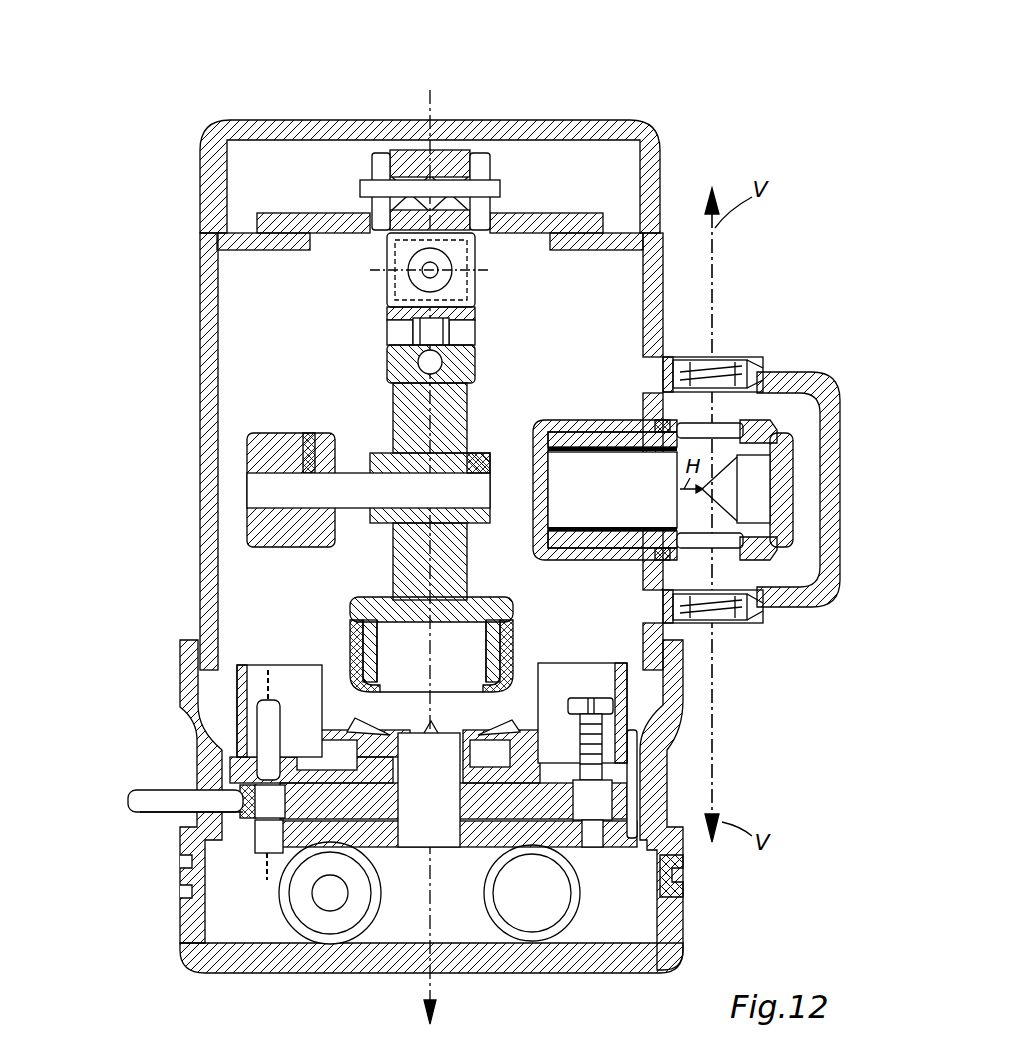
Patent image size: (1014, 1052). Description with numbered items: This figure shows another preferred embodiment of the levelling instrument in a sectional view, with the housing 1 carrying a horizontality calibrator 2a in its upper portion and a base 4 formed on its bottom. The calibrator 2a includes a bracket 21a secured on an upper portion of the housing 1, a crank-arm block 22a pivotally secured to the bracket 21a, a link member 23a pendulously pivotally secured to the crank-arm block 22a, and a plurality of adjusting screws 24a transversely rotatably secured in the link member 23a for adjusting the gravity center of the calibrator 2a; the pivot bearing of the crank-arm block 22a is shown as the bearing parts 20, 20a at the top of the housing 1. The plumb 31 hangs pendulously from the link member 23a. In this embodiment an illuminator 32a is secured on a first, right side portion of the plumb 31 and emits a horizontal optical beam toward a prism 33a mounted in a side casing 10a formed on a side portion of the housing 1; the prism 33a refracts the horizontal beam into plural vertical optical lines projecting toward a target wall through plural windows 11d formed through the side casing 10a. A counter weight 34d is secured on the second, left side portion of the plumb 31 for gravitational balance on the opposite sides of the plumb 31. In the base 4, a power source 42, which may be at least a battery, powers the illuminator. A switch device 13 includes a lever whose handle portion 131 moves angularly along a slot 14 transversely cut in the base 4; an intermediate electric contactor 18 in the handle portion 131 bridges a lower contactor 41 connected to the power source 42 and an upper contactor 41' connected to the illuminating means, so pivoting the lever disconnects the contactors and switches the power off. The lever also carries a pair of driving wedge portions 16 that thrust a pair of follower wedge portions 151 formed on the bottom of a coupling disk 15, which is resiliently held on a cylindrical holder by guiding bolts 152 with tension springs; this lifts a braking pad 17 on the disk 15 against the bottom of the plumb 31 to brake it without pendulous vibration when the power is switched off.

The housing 1 is at (688, 176).
The horizontality calibrator 2a is at (526, 170).
The base 4 is at (690, 936).
The side casing 10a is at (783, 378).
The windows 11d is at (727, 357).
The switch device 13 is at (688, 882).
The slot 14 is at (200, 812).
The coupling disk 15 is at (665, 767).
The driving wedge portions 16 is at (437, 748).
The braking pad 17 is at (665, 812).
The intermediate electric contactor 18 is at (282, 800).
The bearing unit 20 is at (525, 165).
The bearing block 20a is at (376, 160).
The bracket 21a is at (345, 160).
The crank-arm block 22a is at (475, 160).
The link member 23a is at (385, 305).
The adjusting screws 24a is at (387, 360).
The plumb 31 is at (365, 622).
The illuminator 32a is at (647, 493).
The prism 33a is at (753, 503).
The counter weight 34d is at (265, 456).
The lower contactor 41 is at (202, 868).
The upper contactor 41' is at (182, 725).
The power source 42 is at (330, 920).
The handle portion 131 is at (140, 800).
The follower wedge portions 151 is at (476, 786).
The guiding bolts 152 is at (663, 730).